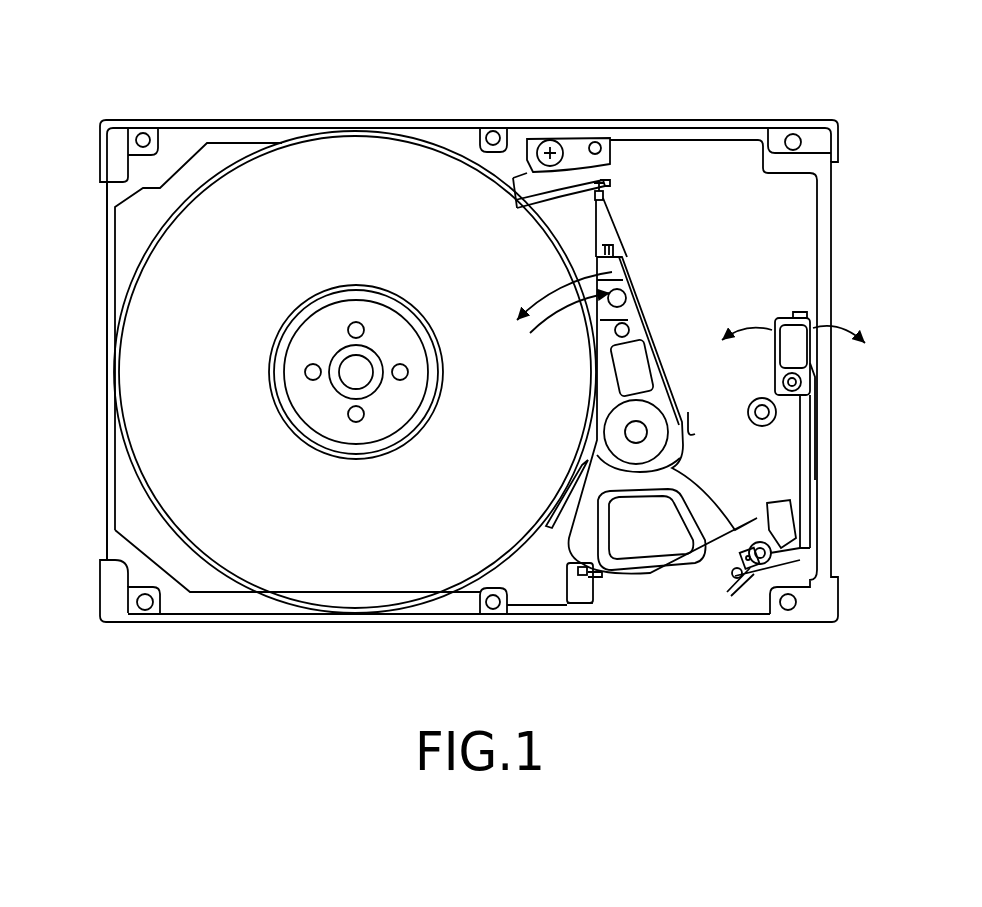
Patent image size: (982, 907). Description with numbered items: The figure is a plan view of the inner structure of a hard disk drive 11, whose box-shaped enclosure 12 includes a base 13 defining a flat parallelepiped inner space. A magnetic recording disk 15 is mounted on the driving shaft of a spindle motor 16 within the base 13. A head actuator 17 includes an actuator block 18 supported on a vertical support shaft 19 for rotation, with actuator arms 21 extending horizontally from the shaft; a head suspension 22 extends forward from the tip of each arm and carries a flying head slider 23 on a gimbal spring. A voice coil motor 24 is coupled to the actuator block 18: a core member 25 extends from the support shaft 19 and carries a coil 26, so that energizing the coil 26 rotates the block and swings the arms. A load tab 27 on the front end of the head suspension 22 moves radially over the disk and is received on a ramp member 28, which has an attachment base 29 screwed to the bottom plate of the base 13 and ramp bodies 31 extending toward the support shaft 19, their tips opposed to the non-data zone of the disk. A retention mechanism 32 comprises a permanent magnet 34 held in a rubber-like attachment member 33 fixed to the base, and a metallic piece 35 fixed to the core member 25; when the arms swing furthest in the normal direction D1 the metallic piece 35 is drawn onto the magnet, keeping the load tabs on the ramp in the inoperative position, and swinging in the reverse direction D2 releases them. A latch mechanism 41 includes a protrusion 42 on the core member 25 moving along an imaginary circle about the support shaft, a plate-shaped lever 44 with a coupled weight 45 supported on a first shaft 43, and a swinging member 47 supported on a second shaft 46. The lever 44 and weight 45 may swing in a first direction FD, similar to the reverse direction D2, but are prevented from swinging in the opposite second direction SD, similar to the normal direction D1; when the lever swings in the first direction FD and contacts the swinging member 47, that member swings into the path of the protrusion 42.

The hard disk drive 11 is at (176, 114).
The enclosure 12 is at (104, 234).
The base 13 is at (106, 298).
The magnetic recording disk 15 is at (117, 353).
The spindle motor 16 is at (364, 390).
The head actuator 17 is at (578, 447).
The actuator block 18 is at (689, 440).
The vertical support shaft 19 is at (626, 437).
The actuator arm 21 is at (656, 358).
The head suspension 22 is at (615, 224).
The flying head slider 23 is at (596, 193).
The voice coil motor 24 is at (551, 525).
The core member 25 is at (657, 573).
The coil 26 is at (603, 533).
The load tab 27 is at (605, 184).
The ramp member 28 is at (537, 140).
The attachment base 29 is at (567, 139).
The ramp body 31 is at (530, 207).
The retention mechanism 32 is at (575, 603).
The attachment member 33 is at (583, 604).
The permanent magnet 34 is at (578, 570).
The metallic piece 35 is at (597, 578).
The latch mechanism 41 is at (814, 522).
The protrusion 42 is at (755, 519).
The first shaft 43 is at (787, 382).
The lever 44 is at (813, 442).
The weight 45 is at (809, 360).
The second shaft 46 is at (785, 553).
The swinging member 47 is at (768, 502).
The normal direction D1 is at (556, 321).
The reverse direction D2 is at (567, 290).
The first direction FD is at (746, 311).
The second direction SD is at (853, 313).